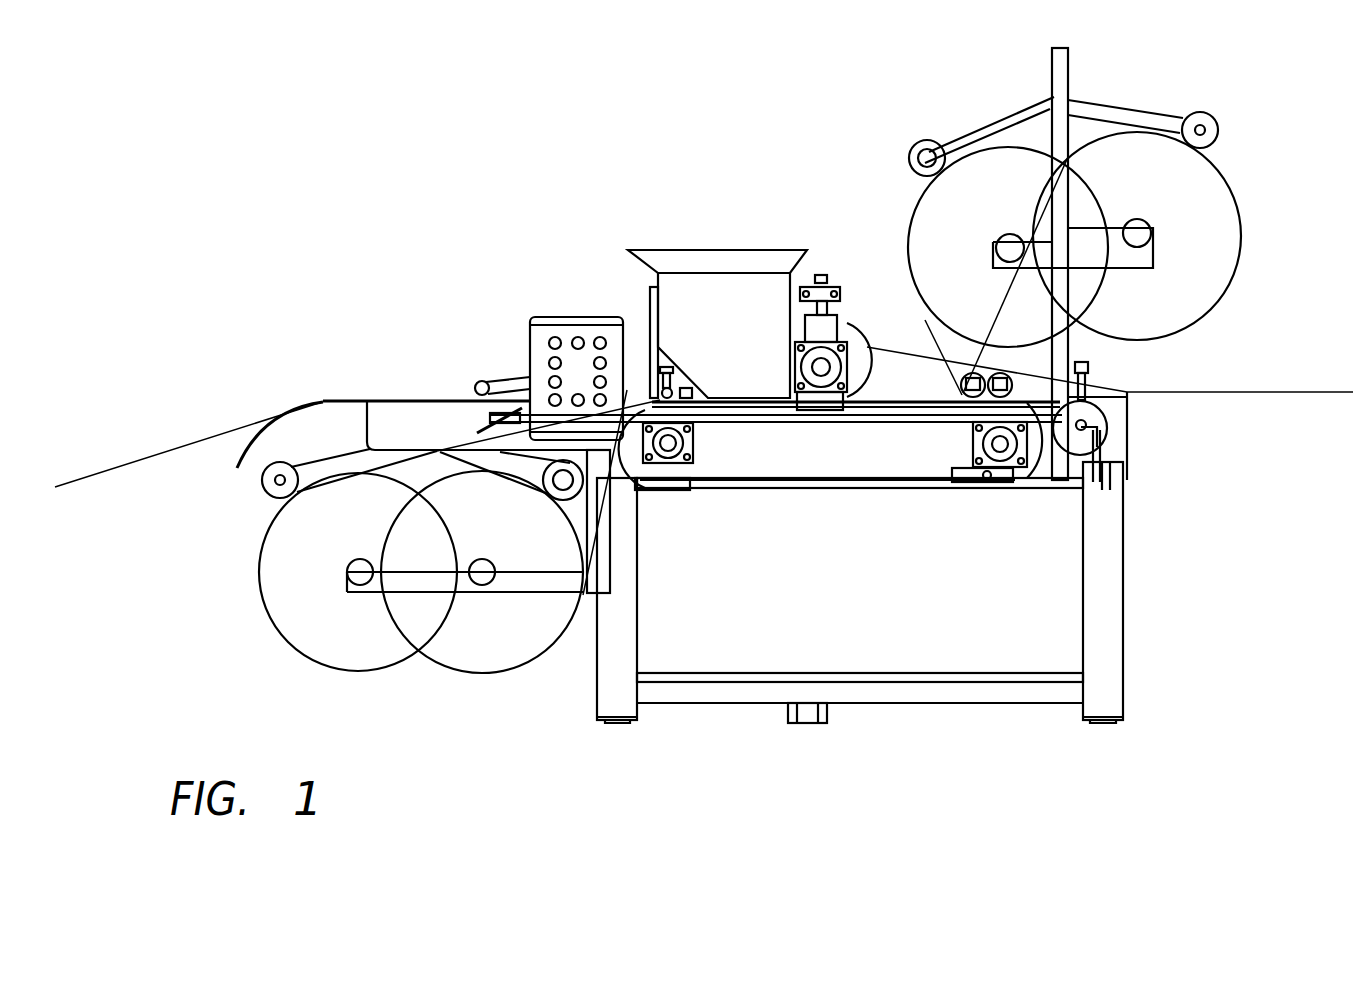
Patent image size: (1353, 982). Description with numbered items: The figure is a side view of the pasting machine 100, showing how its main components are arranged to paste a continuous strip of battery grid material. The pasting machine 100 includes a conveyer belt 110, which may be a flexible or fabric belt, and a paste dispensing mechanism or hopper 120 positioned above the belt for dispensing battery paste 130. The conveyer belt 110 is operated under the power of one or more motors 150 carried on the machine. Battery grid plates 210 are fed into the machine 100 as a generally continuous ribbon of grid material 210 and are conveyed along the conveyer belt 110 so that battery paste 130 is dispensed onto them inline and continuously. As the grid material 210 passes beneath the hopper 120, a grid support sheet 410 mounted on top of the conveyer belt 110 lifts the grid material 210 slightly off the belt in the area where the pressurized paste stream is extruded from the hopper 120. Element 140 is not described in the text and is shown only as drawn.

The pasting machine 100 is at (207, 205).
The conveyer belt 110 is at (680, 480).
The hopper 120 is at (657, 277).
The battery paste 130 is at (732, 298).
The control panel 140 is at (530, 325).
The motor 150 is at (920, 643).
The battery grid plates 210 is at (178, 447).
The grid support sheet 410 is at (402, 400).